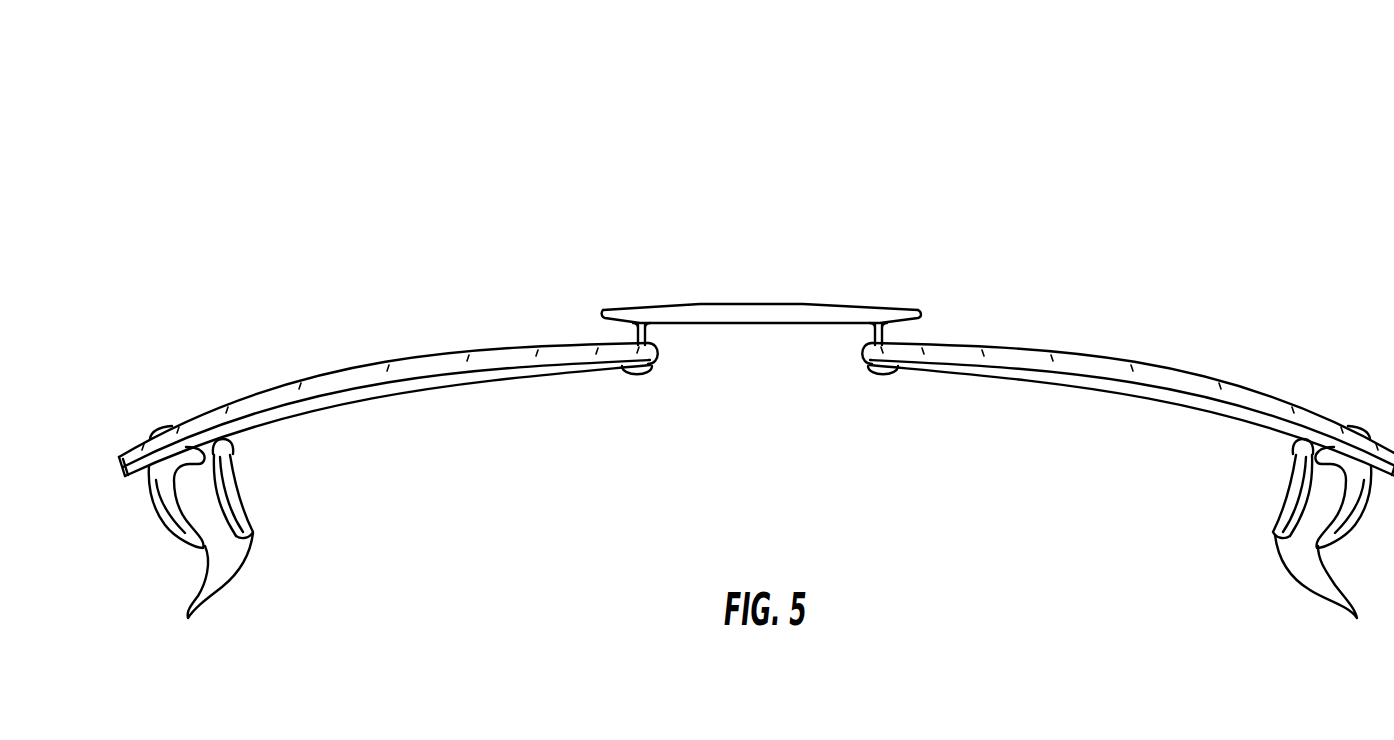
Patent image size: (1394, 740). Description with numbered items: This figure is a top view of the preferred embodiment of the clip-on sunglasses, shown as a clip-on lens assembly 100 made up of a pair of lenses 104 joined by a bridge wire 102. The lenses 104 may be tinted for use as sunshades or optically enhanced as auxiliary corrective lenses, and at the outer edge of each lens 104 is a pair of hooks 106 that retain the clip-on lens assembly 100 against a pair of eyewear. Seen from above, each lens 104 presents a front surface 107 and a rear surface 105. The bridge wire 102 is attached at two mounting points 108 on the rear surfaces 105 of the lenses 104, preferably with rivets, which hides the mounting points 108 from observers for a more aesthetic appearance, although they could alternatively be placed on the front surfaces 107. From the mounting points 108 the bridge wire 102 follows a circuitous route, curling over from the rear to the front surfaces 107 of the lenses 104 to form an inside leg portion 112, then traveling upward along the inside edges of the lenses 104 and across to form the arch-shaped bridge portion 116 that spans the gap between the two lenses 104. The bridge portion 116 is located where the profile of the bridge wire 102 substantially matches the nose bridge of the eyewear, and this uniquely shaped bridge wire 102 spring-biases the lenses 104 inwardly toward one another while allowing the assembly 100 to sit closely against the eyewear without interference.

The clip-on lens assembly 100 is at (365, 151).
The bridge wire 102 is at (716, 294).
The lenses 104 is at (192, 414).
The rear surfaces 105 is at (408, 394).
The hooks 106 is at (188, 618).
The front surfaces 107 is at (322, 374).
The mounting points 108 is at (652, 374).
The inside leg portion 112 is at (685, 323).
The bridge portion 116 is at (808, 302).